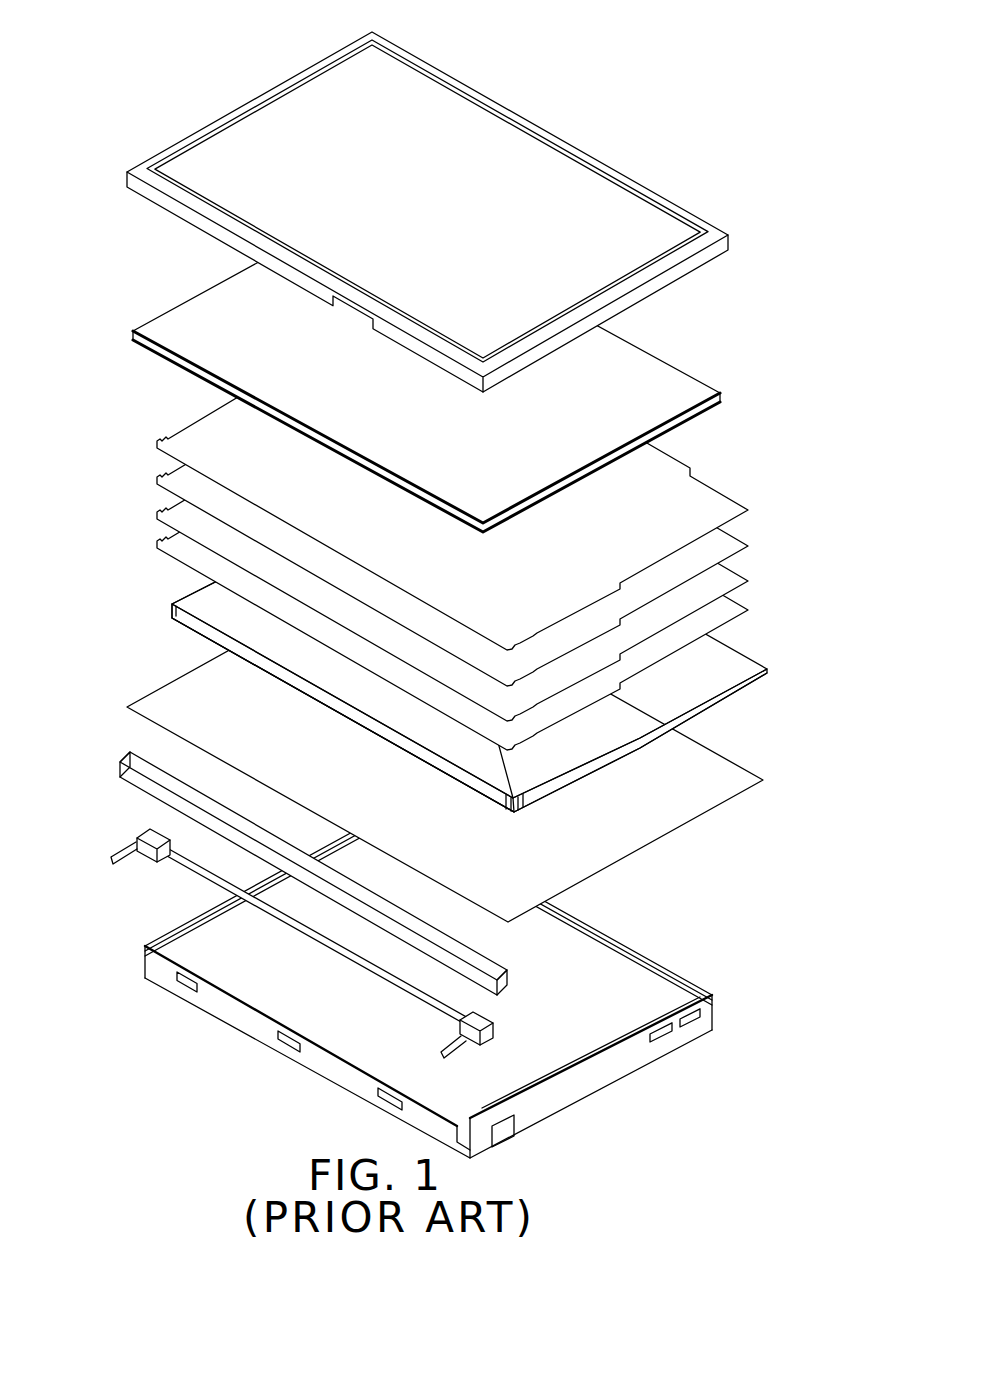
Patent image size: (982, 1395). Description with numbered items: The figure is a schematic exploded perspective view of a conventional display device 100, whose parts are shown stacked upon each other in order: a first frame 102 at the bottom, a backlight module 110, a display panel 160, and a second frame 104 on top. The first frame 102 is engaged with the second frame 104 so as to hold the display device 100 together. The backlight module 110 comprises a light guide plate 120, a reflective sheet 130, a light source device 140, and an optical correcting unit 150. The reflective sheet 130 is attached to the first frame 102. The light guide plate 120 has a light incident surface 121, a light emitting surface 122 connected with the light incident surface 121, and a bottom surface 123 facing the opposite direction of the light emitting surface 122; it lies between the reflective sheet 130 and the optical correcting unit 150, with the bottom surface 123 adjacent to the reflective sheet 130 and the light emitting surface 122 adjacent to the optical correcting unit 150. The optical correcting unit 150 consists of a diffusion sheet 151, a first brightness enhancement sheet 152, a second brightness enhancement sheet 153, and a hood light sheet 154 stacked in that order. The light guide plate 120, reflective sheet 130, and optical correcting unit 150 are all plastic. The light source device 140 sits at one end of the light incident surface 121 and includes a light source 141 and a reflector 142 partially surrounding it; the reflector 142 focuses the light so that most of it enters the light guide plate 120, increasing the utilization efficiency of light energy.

The display device 100 is at (608, 62).
The first frame 102 is at (708, 1008).
The second frame 104 is at (243, 105).
The backlight module 110 is at (456, 556).
The light guide plate 120 is at (475, 643).
The light incident surface 121 is at (253, 657).
The light emitting surface 122 is at (717, 677).
The bottom surface 123 is at (187, 633).
The reflective sheet 130 is at (717, 773).
The light source device 140 is at (267, 905).
The light source 141 is at (193, 867).
The reflector 142 is at (163, 795).
The optical correcting unit 150 is at (514, 525).
The diffusion sheet 151 is at (730, 612).
The first brightness enhancement sheet 152 is at (733, 583).
The second brightness enhancement sheet 153 is at (730, 545).
The hood light sheet 154 is at (816, 612).
The display panel 160 is at (648, 389).